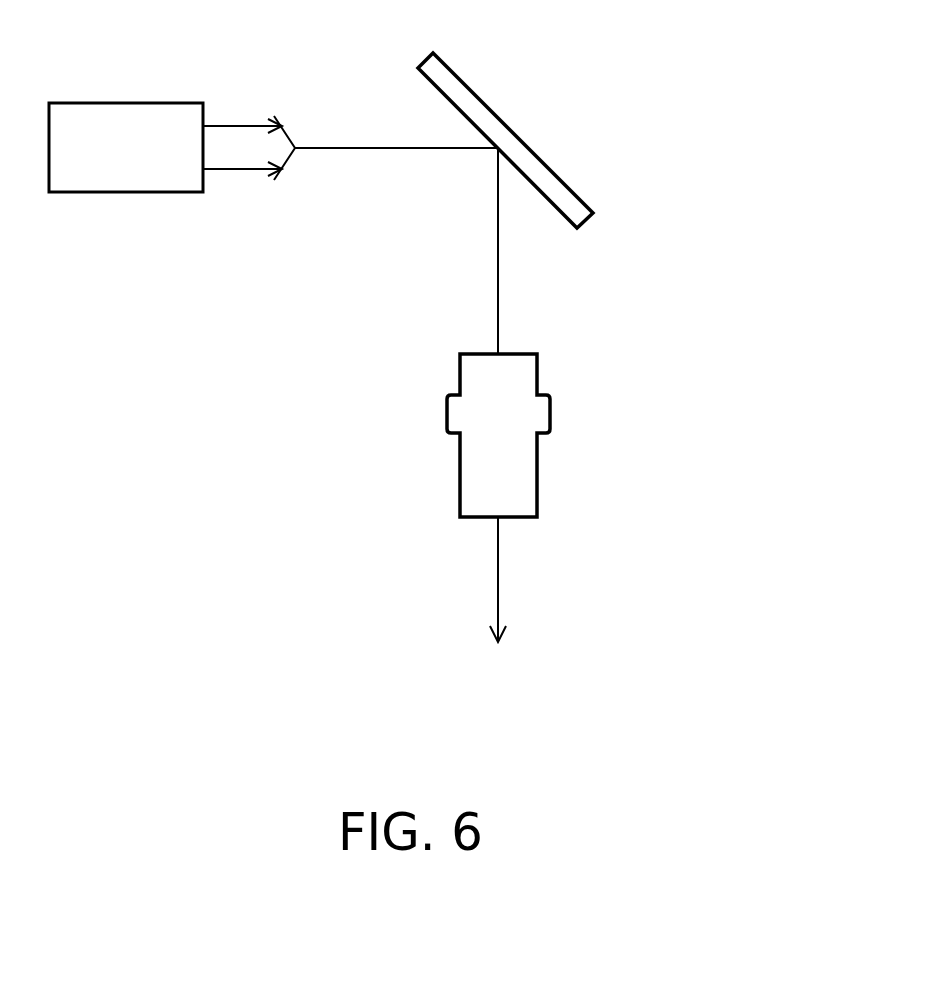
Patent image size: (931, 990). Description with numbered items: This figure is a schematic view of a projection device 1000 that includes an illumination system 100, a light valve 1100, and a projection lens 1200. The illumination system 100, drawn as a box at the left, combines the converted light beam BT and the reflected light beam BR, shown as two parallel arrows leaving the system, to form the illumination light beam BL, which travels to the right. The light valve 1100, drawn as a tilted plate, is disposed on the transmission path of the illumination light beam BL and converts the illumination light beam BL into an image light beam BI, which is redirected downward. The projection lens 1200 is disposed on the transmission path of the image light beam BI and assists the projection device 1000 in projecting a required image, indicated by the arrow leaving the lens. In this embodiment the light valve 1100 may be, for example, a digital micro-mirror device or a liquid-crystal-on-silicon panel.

The illumination system 100 is at (88, 192).
The converted light beam BT is at (238, 124).
The reflected light beam BR is at (237, 171).
The illumination light beam BL is at (370, 150).
The light valve 1100 is at (580, 214).
The image light beam BI is at (497, 279).
The projection lens 1200 is at (537, 480).
The projection device 1000 is at (826, 692).